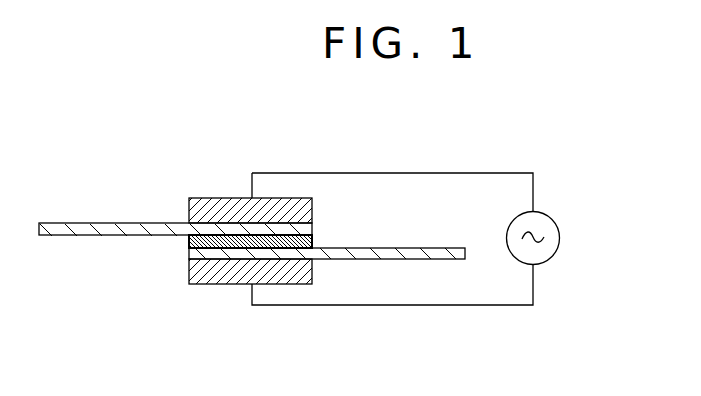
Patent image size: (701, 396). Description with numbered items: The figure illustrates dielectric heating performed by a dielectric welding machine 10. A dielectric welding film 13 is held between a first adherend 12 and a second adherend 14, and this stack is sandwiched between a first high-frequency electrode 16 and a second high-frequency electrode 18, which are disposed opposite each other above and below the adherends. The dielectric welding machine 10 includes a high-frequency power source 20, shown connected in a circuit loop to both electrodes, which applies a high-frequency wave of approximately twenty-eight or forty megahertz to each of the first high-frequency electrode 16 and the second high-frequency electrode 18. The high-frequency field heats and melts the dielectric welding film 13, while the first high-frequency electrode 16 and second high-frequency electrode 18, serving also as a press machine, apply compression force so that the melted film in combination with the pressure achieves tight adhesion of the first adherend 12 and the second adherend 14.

The dielectric welding machine 10 is at (567, 130).
The first adherend 12 is at (104, 223).
The dielectric welding film 13 is at (189, 244).
The second adherend 14 is at (416, 260).
The first high-frequency electrode 16 is at (313, 214).
The second high-frequency electrode 18 is at (296, 285).
The high-frequency power source 20 is at (560, 247).